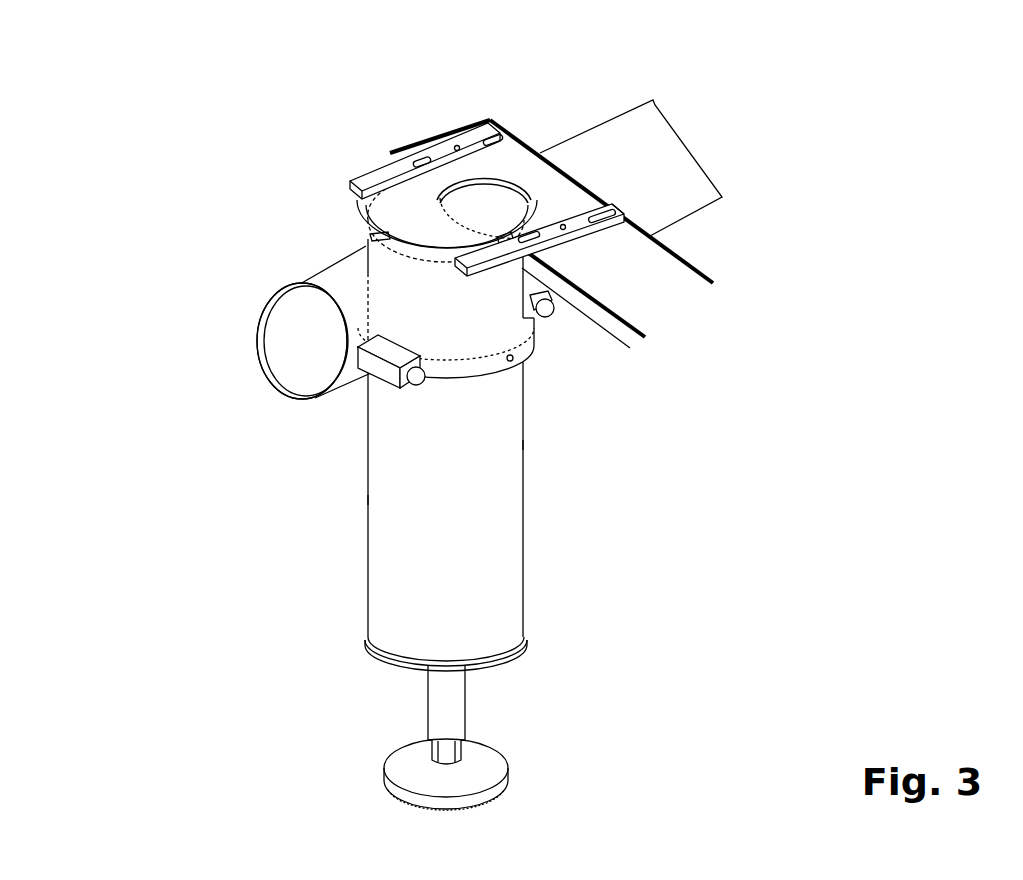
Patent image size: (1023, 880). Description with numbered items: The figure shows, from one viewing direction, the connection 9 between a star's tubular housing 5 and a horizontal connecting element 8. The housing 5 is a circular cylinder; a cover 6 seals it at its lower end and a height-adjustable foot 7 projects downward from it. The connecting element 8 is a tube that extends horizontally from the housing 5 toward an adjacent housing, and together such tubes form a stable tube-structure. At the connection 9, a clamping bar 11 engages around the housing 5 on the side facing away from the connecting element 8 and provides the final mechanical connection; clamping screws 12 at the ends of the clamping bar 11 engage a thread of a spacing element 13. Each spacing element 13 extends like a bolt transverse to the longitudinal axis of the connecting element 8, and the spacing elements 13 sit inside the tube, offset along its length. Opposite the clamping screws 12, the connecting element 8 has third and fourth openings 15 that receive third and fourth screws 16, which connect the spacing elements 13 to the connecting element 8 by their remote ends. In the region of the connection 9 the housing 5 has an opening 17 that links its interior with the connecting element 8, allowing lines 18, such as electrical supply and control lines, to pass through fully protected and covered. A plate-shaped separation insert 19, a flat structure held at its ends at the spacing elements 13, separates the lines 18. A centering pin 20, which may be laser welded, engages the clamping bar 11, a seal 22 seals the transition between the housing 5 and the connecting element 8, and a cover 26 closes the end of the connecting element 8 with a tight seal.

The tubular housing 5 is at (398, 603).
The cover 6 is at (402, 653).
The height-adjustable foot 7 is at (447, 710).
The connecting element 8 is at (330, 278).
The connection 9 is at (362, 130).
The clamping bar 11 is at (510, 445).
The clamping screw 12 is at (413, 380).
The spacing element 13 is at (443, 150).
The third and fourth openings 15 is at (620, 212).
The third and fourth screws 16 is at (608, 207).
The opening 17 is at (447, 217).
The lines 18 is at (487, 178).
The separation insert 19 is at (605, 150).
The centering pin 20 is at (512, 360).
The seal 22 is at (480, 500).
The cover 26 is at (317, 343).